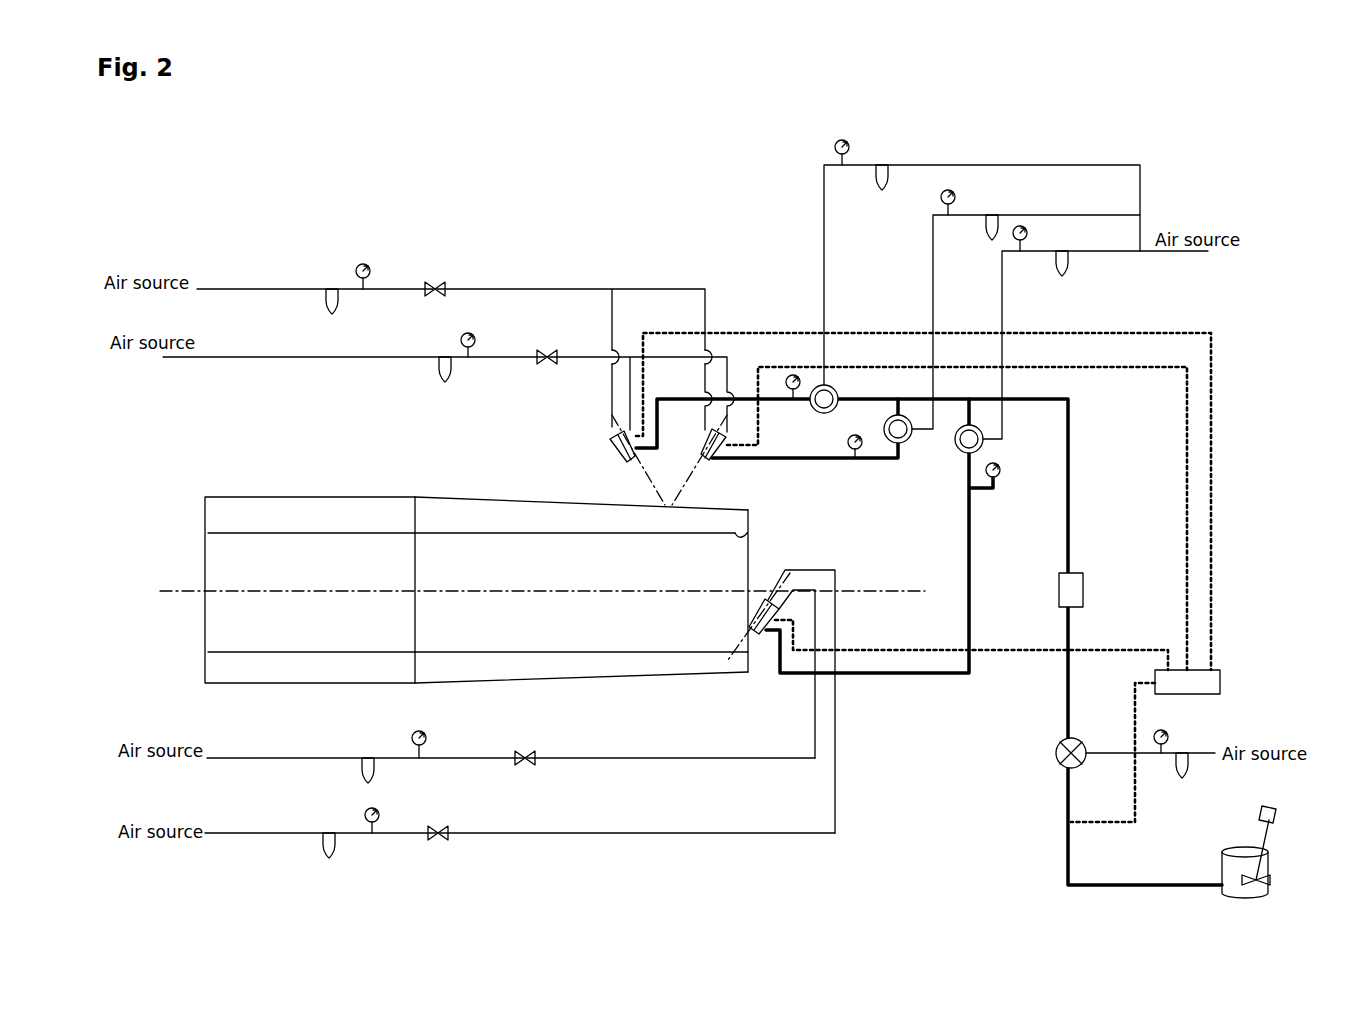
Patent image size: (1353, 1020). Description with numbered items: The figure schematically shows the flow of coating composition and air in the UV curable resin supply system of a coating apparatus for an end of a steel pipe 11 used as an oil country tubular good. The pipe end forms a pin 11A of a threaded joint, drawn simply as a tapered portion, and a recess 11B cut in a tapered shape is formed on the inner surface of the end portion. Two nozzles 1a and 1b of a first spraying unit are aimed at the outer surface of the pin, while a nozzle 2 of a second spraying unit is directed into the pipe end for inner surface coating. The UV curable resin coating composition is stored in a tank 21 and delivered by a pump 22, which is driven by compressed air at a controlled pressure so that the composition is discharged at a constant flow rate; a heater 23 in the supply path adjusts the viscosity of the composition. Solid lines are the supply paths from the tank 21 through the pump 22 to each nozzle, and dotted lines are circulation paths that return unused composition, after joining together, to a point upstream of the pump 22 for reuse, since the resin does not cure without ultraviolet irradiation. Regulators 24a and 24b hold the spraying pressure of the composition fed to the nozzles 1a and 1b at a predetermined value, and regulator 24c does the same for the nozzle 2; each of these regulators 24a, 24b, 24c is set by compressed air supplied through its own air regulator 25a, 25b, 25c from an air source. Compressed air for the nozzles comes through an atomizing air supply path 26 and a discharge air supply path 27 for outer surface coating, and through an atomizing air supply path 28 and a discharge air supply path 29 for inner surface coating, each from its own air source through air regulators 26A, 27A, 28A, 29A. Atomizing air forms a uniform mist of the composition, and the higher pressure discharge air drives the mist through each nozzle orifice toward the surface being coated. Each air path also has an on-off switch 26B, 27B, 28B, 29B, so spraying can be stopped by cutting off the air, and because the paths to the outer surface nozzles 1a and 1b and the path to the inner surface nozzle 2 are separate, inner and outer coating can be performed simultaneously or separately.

The nozzle of the first spraying unit 1a is at (612, 460).
The nozzle of the first spraying unit 1b is at (697, 447).
The nozzle of the second spraying unit 2 is at (781, 701).
The steel pipe 11 is at (297, 488).
The pin 11A is at (581, 579).
The recess 11B is at (748, 532).
The tank 21 is at (1264, 852).
The pump 22 is at (1085, 745).
The heater 23 is at (1086, 580).
The regulator 24a is at (963, 303).
The regulator 24b is at (994, 338).
The regulator 24c is at (985, 444).
The air regulator 25a is at (876, 163).
The air regulator 25b is at (991, 215).
The air regulator 25c is at (1063, 254).
The atomizing air supply path 26 is at (257, 289).
The air regulator 26A is at (351, 293).
The on-off switch 26B is at (447, 302).
The discharge air supply path 27 is at (262, 357).
The air regulator 27A is at (447, 367).
The on-off switch 27B is at (551, 369).
The atomizing air supply path 28 is at (292, 758).
The air regulator 28A is at (389, 753).
The on-off switch 28B is at (526, 744).
The discharge air supply path 29 is at (259, 833).
The air regulator 29A is at (345, 846).
The on-off switch 29B is at (443, 846).